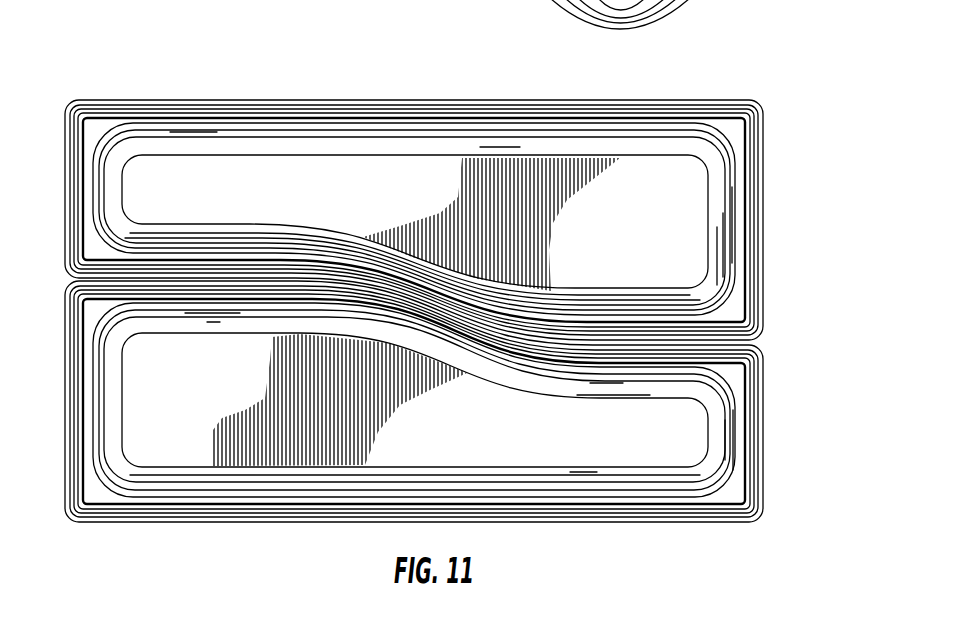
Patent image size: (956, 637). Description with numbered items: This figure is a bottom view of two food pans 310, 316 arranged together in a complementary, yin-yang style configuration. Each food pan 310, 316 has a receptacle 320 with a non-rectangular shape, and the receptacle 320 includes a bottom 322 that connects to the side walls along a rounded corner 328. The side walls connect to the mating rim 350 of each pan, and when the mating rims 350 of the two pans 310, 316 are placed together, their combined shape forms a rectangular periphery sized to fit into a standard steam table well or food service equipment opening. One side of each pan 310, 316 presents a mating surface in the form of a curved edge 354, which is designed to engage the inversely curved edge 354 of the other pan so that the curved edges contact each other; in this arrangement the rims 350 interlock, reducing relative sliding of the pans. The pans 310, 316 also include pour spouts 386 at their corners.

The food pan 310 is at (780, 97).
The food pan 316 is at (786, 402).
The receptacle 320 is at (413, 190).
The bottom 322 is at (627, 230).
The rounded corner 328 is at (215, 140).
The mating rim 350 is at (78, 168).
The curved edge 354 is at (578, 358).
The pour spout 386 is at (746, 117).